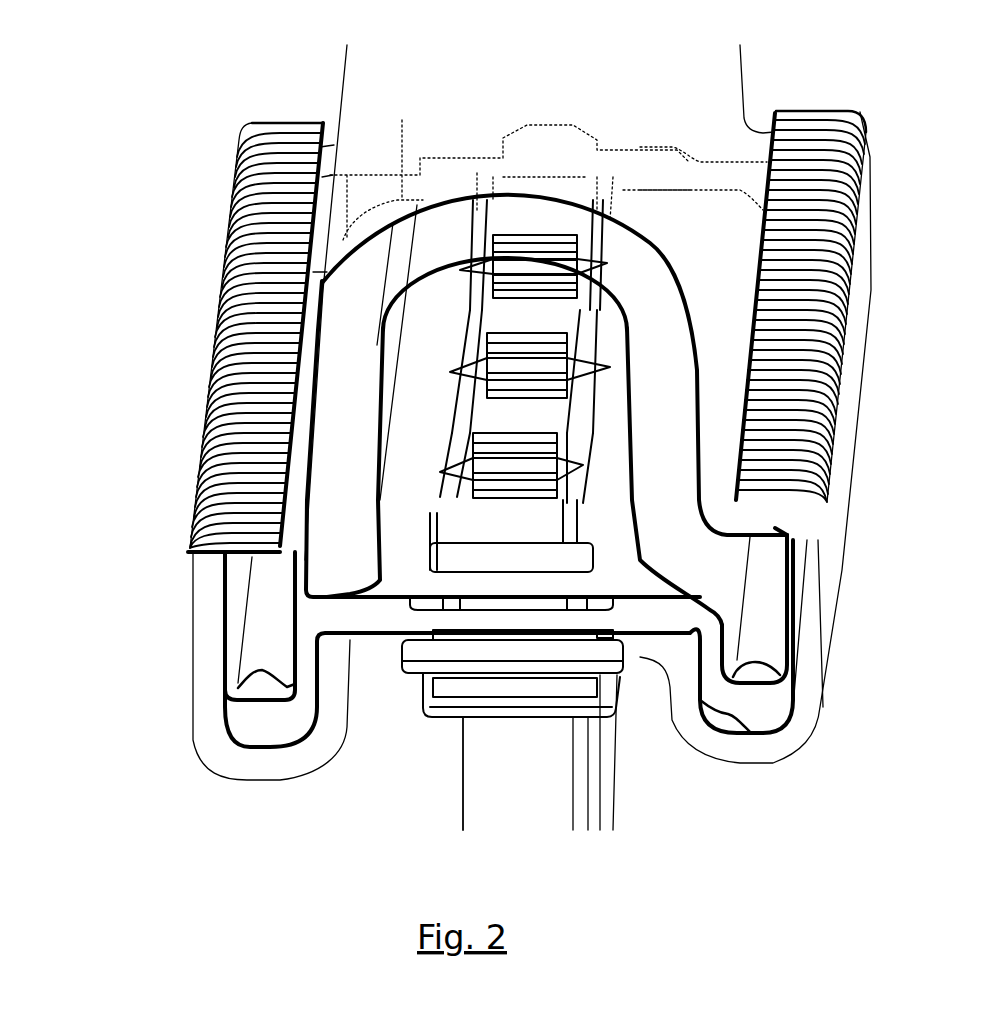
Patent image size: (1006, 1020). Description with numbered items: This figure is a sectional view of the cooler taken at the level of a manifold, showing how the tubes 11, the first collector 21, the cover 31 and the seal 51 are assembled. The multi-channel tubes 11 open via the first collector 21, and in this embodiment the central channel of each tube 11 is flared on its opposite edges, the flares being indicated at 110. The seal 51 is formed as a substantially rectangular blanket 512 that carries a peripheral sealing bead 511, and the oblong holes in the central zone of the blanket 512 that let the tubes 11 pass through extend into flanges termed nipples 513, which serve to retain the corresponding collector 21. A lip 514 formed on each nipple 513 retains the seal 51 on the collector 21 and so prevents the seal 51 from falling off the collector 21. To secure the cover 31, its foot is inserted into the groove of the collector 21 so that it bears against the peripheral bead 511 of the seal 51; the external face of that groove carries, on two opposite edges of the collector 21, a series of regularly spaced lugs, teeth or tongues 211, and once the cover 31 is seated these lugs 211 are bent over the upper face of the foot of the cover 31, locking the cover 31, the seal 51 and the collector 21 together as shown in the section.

The tubes 11 is at (493, 788).
The first collector 21 is at (195, 690).
The cover 31 is at (775, 570).
The seal 51 is at (775, 693).
The flares 110 is at (440, 443).
The lugs 211 is at (247, 523).
The peripheral sealing bead 511 is at (267, 723).
The blanket 512 is at (393, 577).
The nipples 513 is at (577, 683).
The lip 514 is at (540, 705).